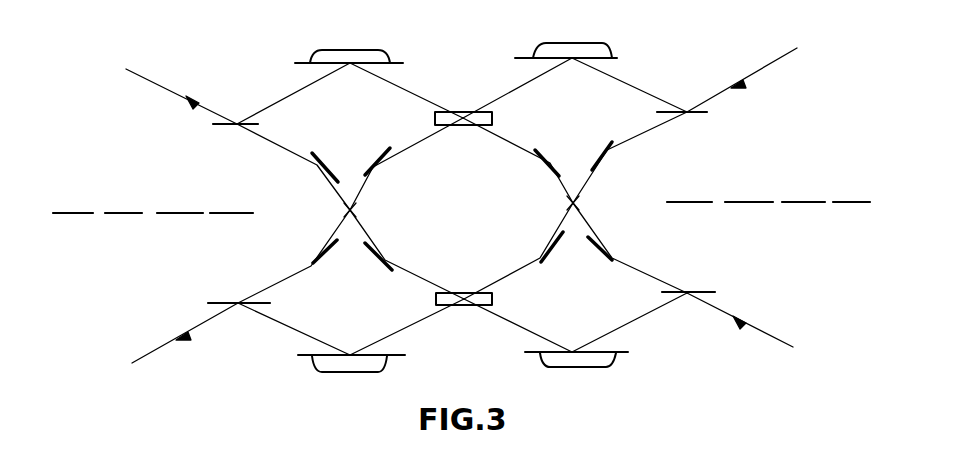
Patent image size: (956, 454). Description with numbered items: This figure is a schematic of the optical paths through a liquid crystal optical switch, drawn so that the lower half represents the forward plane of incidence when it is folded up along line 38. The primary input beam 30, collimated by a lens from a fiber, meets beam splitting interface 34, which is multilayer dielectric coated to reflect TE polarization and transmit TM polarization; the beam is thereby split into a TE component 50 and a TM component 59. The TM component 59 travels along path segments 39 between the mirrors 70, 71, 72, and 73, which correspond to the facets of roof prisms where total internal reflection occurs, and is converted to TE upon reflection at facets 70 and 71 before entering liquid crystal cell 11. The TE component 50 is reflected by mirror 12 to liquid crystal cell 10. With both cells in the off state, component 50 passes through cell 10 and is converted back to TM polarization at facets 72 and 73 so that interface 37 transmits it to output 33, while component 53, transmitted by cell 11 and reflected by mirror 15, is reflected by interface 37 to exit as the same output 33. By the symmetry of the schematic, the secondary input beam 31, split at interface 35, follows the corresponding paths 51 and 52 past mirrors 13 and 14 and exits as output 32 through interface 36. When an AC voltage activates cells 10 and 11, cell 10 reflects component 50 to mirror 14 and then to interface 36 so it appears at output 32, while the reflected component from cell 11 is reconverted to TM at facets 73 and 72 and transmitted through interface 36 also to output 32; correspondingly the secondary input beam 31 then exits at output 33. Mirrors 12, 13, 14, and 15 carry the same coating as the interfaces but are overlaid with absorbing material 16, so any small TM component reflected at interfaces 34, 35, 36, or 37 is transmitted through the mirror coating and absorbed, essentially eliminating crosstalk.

The liquid crystal cell 10 is at (465, 112).
The liquid crystal cell 11 is at (462, 307).
The mirror 12 is at (297, 63).
The mirror 13 is at (303, 357).
The mirror 14 is at (619, 56).
The mirror 15 is at (622, 357).
The absorbing material 16 is at (358, 50).
The primary input beam 30 is at (166, 89).
The secondary input beam 31 is at (147, 353).
The output 32 is at (770, 67).
The output 33 is at (785, 343).
The beam splitting interface 34 is at (222, 128).
The beam splitting interface 35 is at (228, 272).
The beam splitting interface 36 is at (688, 115).
The beam splitting interface 37 is at (707, 288).
The line 38 is at (158, 212).
The path segments 39 is at (353, 208).
The TE (s wave) component 50 is at (290, 93).
The beam path component 51 is at (287, 328).
The beam path component 52 is at (625, 80).
The component 53 is at (633, 322).
The TM (p wave) component 59 is at (283, 152).
The mirror 70 is at (368, 143).
The mirror 71 is at (393, 270).
The mirror 72 is at (613, 140).
The mirror 73 is at (612, 262).